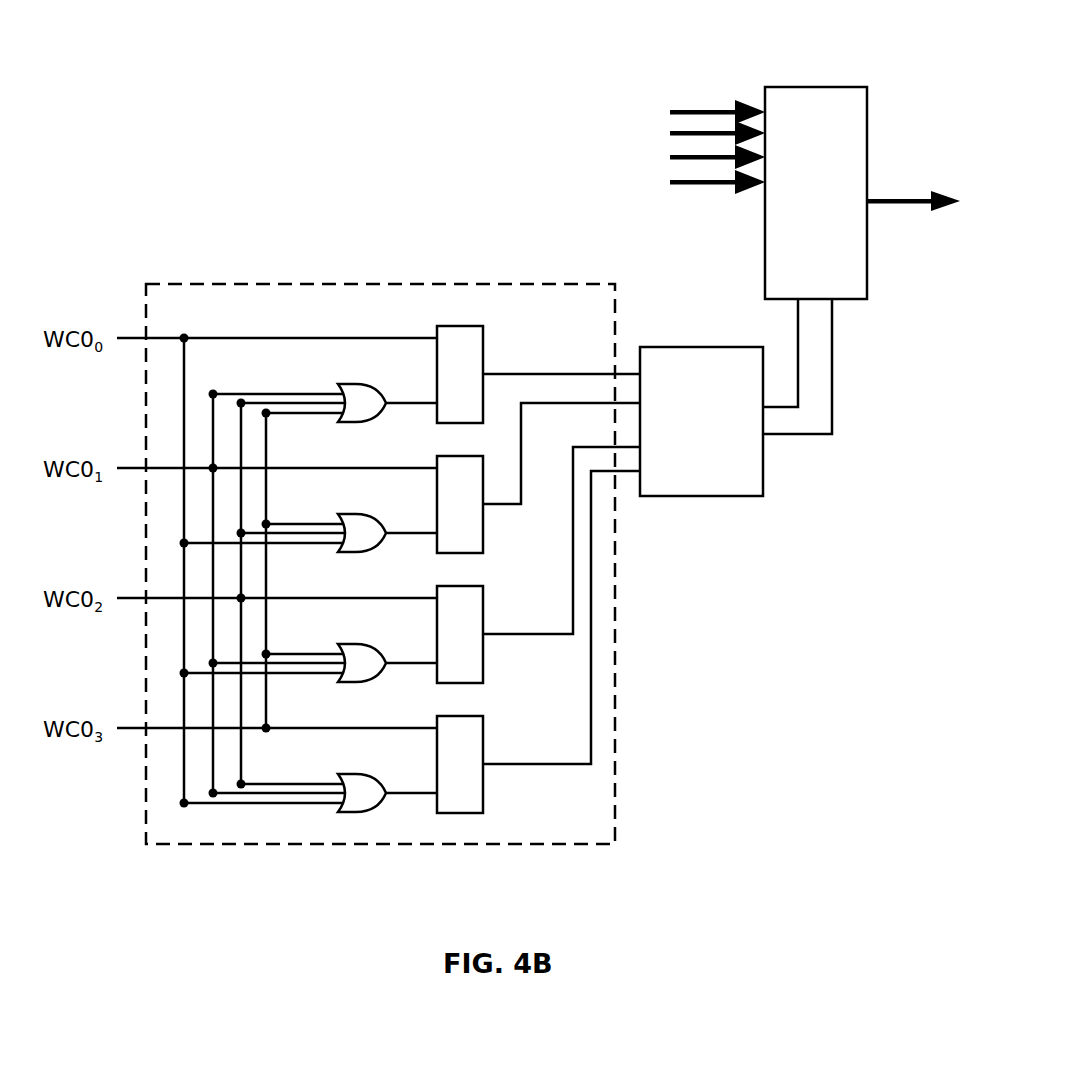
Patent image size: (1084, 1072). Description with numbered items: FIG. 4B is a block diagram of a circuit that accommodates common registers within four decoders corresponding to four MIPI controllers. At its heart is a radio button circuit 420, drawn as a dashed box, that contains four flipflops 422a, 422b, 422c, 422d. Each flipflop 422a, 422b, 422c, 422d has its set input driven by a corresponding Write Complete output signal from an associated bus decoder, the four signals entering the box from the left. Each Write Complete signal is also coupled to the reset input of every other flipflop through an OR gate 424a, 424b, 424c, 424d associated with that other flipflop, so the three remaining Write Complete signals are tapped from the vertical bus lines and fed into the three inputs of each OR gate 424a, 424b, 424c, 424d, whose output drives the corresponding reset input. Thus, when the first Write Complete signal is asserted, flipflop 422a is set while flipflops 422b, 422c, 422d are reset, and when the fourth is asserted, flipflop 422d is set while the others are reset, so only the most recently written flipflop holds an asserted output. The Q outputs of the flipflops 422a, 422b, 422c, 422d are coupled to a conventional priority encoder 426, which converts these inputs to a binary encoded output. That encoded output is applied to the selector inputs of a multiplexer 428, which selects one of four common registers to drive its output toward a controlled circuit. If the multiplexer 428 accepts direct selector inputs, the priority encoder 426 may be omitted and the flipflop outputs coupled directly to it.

The radio button circuit 420 is at (195, 283).
The flipflop 422a is at (484, 345).
The flipflop 422b is at (484, 530).
The flipflop 422c is at (484, 660).
The flipflop 422d is at (484, 740).
The OR gate 424a is at (357, 386).
The OR gate 424b is at (357, 516).
The OR gate 424c is at (357, 646).
The OR gate 424d is at (357, 776).
The priority encoder 426 is at (745, 496).
The multiplexer 428 is at (832, 87).